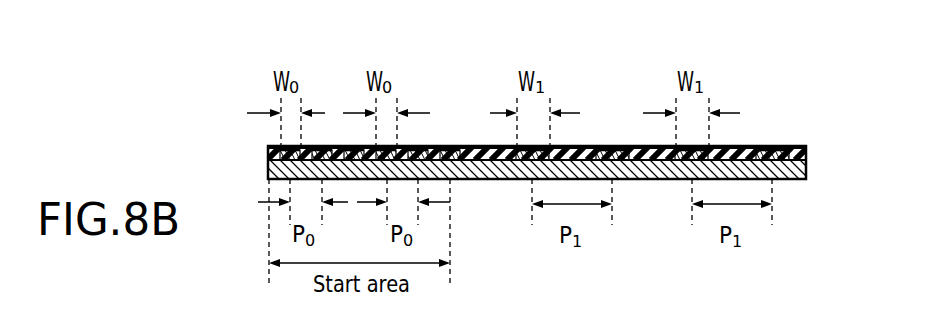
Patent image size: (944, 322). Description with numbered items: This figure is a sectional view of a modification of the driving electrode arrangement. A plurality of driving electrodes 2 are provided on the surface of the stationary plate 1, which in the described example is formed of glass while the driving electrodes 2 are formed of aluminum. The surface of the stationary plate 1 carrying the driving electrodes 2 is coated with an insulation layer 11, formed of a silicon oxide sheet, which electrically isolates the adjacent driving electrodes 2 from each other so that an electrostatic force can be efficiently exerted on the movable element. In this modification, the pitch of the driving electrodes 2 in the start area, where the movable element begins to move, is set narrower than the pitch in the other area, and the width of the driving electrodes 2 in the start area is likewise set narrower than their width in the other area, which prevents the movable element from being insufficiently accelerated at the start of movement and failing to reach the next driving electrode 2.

The stationary plate 1 is at (648, 181).
The driving electrode 2 is at (774, 150).
The insulation layer 11 is at (605, 148).